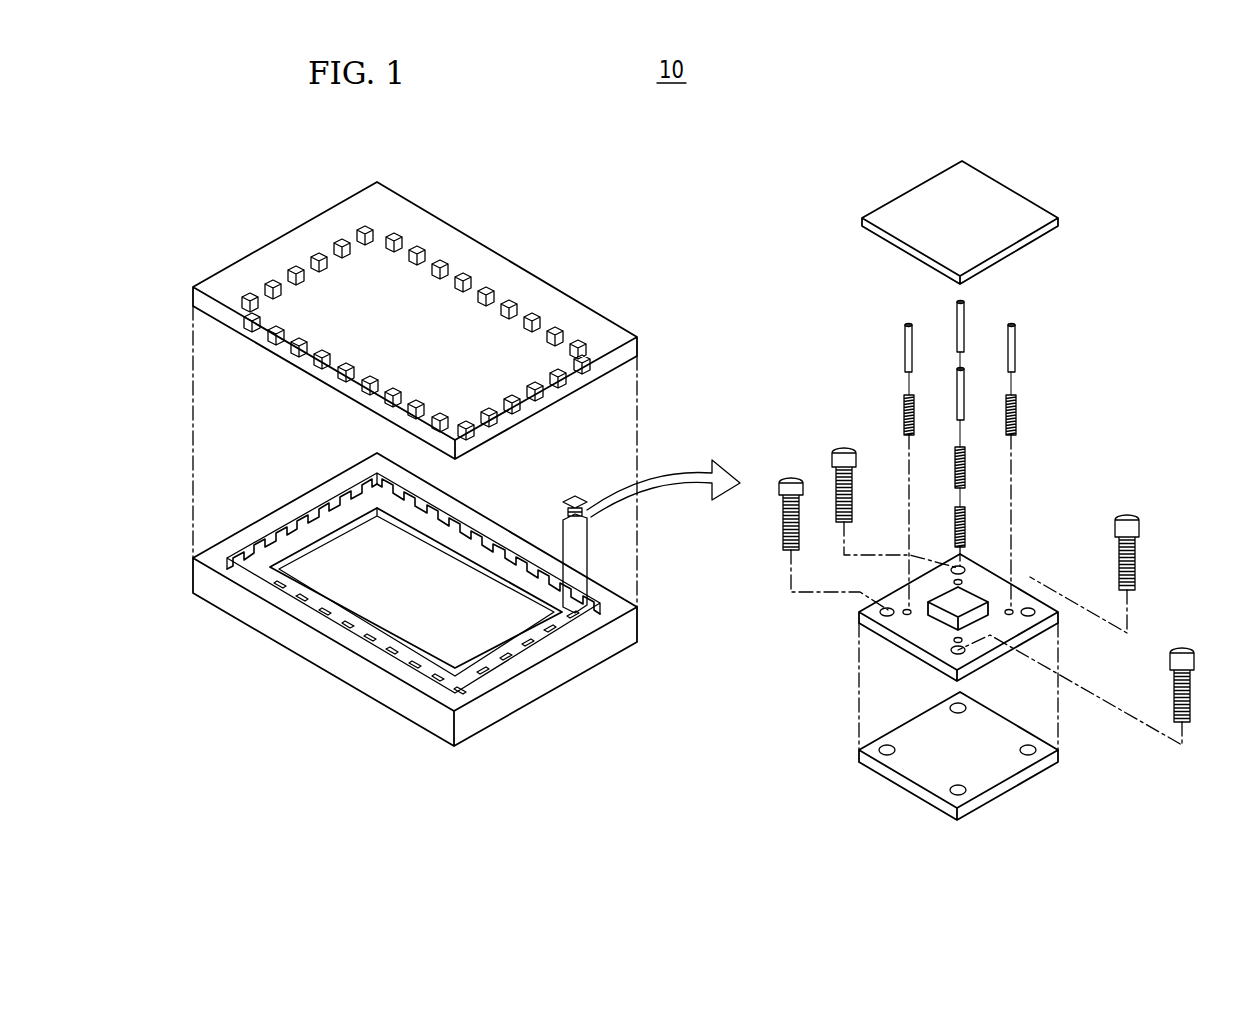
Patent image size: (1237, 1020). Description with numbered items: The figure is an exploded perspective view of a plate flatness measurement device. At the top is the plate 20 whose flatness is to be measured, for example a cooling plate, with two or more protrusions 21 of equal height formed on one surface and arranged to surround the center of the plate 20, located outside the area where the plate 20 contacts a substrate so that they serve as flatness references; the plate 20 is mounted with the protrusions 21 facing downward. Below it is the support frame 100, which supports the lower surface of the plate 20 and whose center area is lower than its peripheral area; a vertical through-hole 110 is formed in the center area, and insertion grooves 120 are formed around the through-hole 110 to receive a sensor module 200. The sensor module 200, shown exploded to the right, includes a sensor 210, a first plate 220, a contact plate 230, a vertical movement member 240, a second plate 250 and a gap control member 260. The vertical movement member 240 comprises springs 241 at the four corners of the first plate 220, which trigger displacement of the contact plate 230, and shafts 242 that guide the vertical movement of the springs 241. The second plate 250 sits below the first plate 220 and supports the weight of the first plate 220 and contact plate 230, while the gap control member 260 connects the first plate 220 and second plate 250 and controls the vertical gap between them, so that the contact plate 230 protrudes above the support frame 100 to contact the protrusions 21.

The plate 20 is at (312, 230).
The protrusions 21 is at (263, 282).
The support frame 100 is at (397, 668).
The through-hole 110 is at (355, 605).
The insertion grooves 120 is at (292, 533).
The sensor module 200 is at (588, 492).
The sensor 210 is at (940, 612).
The first plate 220 is at (938, 651).
The contact plate 230 is at (1040, 214).
The vertical movement member 240 is at (1027, 455).
The springs 241 is at (1017, 411).
The shafts 242 is at (1015, 358).
The second plate 250 is at (1003, 770).
The gap control member 260 is at (1140, 524).